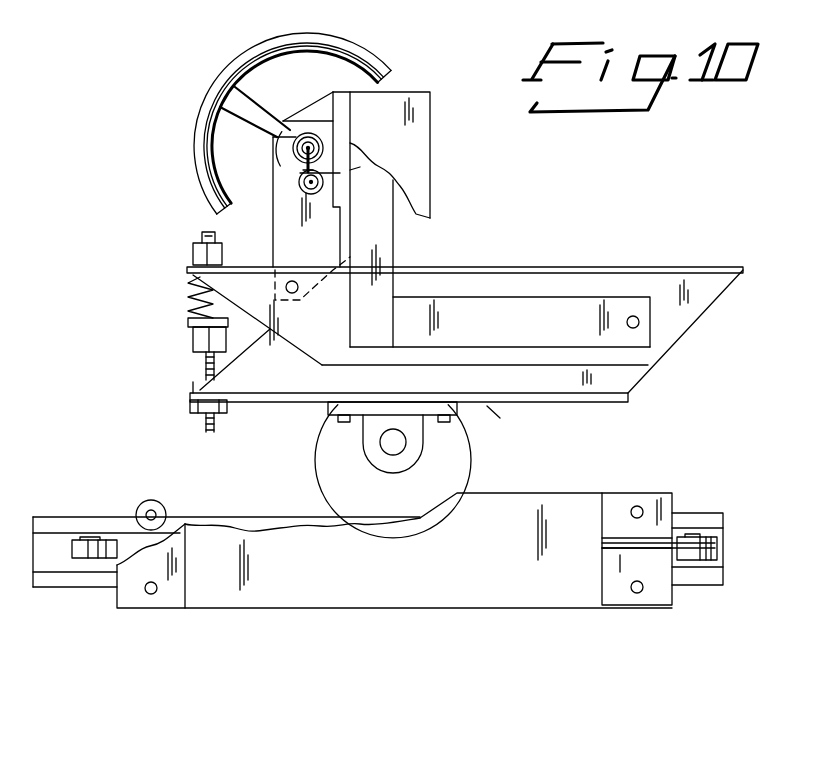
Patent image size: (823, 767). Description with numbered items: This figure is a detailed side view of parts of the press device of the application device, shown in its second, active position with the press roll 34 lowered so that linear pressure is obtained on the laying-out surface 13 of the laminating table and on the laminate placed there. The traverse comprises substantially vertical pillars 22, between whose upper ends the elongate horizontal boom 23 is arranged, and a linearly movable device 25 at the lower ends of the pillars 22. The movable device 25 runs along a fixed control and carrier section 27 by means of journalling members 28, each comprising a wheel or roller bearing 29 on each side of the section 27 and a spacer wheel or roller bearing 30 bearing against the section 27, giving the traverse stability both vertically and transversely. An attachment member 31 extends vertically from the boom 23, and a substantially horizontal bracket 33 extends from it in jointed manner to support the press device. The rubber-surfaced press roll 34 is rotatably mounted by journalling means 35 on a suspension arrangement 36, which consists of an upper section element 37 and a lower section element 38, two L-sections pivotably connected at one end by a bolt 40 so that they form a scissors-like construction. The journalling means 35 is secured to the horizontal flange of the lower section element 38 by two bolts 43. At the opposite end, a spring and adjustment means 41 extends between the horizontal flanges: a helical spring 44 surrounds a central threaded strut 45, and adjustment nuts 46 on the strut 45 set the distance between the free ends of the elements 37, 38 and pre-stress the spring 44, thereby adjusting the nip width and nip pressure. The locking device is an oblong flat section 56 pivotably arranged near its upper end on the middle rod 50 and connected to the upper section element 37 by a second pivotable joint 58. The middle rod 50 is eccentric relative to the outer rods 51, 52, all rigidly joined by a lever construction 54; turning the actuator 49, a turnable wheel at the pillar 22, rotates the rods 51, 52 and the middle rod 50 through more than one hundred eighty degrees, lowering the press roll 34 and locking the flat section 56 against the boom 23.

The laying-out surface 13 is at (222, 513).
The vertical pillars 22 is at (415, 117).
The boom 23 is at (360, 167).
The linearly movable device 25 is at (565, 510).
The control and carrier section 27 is at (55, 543).
The journalling members 28 is at (643, 492).
The wheel or roller bearing 29 is at (147, 499).
The spacer wheel or roller bearing 30 is at (717, 548).
The attachment member 31 is at (383, 238).
The bracket 33 is at (555, 305).
The press roll 34 is at (342, 483).
The journalling means 35 is at (382, 442).
The suspension arrangement 36 is at (500, 418).
The upper section element 37 is at (713, 285).
The lower section element 38 is at (623, 380).
The bolt 40 is at (639, 322).
The spring and adjustment means 41 is at (180, 322).
The bolts 43 is at (333, 417).
The helical spring 44 is at (200, 298).
The threaded strut 45 is at (190, 408).
The adjustment nuts 46 is at (193, 244).
The actuator 49 is at (227, 73).
The middle rod 50 is at (298, 180).
The outer rod 51 is at (275, 120).
The outer rod 52 is at (275, 120).
The lever construction 54 is at (277, 148).
The oblong flat section 56 is at (287, 208).
The second pivotable joint 58 is at (288, 283).